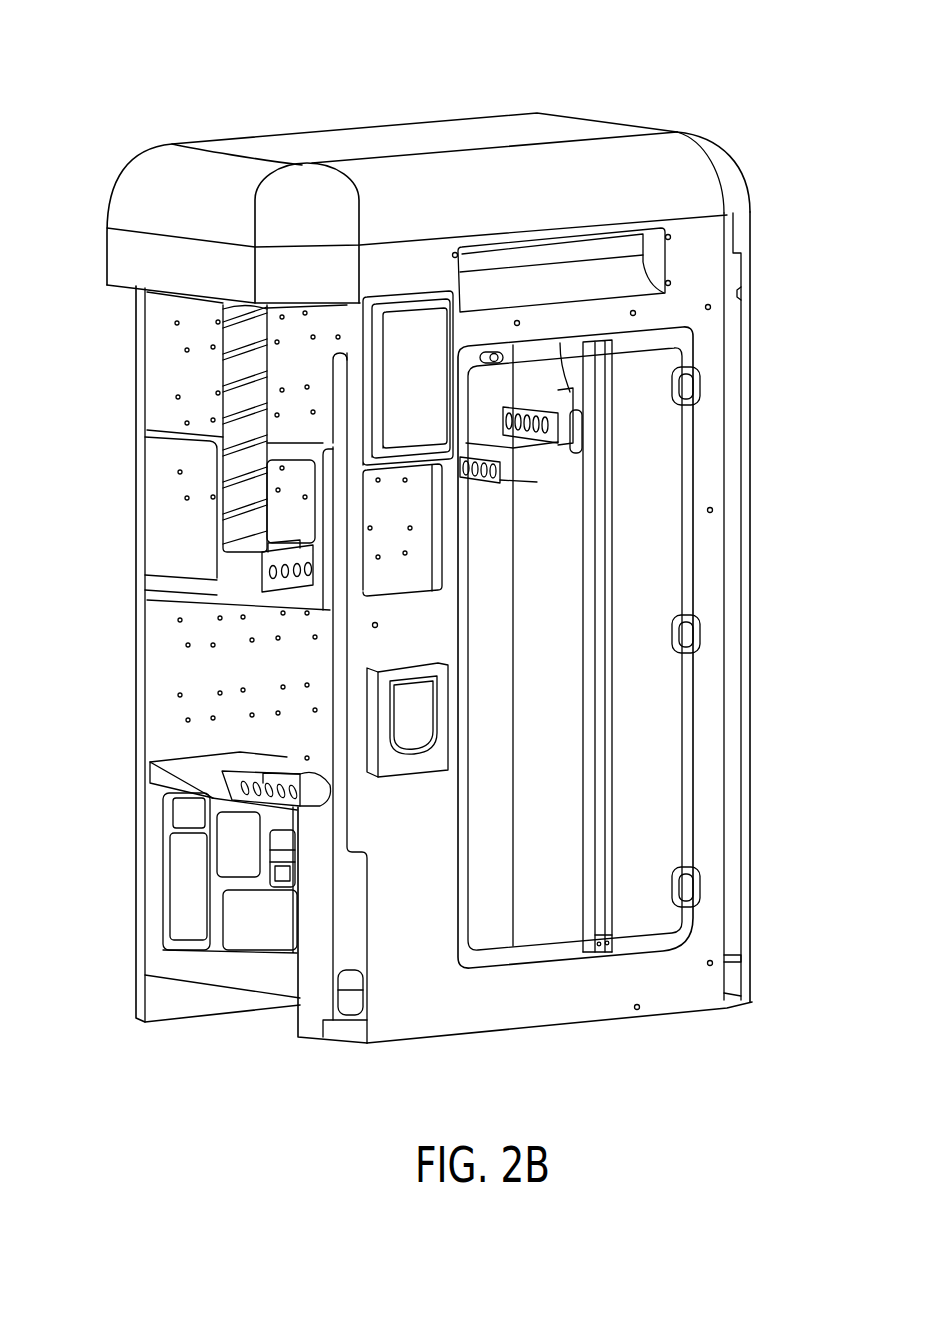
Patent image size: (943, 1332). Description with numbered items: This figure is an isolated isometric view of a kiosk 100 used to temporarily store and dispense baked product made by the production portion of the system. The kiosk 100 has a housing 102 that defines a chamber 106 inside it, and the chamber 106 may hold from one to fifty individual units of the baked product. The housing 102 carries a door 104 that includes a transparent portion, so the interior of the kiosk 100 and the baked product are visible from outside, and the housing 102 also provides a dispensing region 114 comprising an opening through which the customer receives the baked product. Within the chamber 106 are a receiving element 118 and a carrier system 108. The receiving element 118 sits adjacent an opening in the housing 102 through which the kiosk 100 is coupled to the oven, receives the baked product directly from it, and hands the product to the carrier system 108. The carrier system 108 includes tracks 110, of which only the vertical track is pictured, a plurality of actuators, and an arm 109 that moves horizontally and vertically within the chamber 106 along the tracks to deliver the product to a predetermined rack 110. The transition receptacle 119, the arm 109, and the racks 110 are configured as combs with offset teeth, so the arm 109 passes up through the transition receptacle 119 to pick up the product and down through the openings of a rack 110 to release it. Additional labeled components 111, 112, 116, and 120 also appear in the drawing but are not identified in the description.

The kiosk 100 is at (120, 93).
The housing 102 is at (129, 208).
The door 104 is at (746, 544).
The chamber 106 is at (675, 776).
The carrier system 108 is at (653, 464).
The arm 109 is at (552, 430).
The rack 110 is at (509, 493).
The vertical column 111 is at (611, 522).
The display panel 112 is at (394, 388).
The dispensing region 114 is at (371, 540).
The connector slot box 116 is at (247, 572).
The receiving element 118 is at (210, 768).
The transition receptacle 119 is at (264, 898).
The tray 120 is at (637, 251).